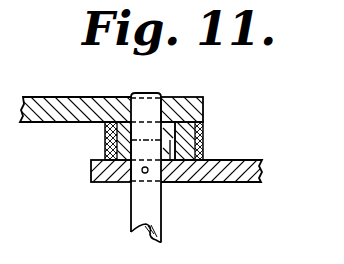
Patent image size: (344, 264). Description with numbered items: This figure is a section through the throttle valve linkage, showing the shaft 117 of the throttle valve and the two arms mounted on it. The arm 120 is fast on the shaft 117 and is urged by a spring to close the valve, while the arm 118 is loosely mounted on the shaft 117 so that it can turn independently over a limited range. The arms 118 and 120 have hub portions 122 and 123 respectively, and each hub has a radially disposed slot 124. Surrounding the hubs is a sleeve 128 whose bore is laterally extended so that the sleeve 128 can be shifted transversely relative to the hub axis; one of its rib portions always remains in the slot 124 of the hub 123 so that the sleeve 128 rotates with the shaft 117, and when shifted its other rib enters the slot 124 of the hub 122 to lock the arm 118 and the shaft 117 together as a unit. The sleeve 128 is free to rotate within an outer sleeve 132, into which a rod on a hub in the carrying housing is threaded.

The shaft 117 is at (141, 213).
The arm 118 is at (51, 117).
The arm 120 is at (226, 173).
The hub portion 122 is at (121, 97).
The hub portion 123 is at (126, 181).
The radially disposed slot 124 is at (173, 97).
The sleeve 128 is at (107, 137).
The sleeve 132 is at (198, 142).